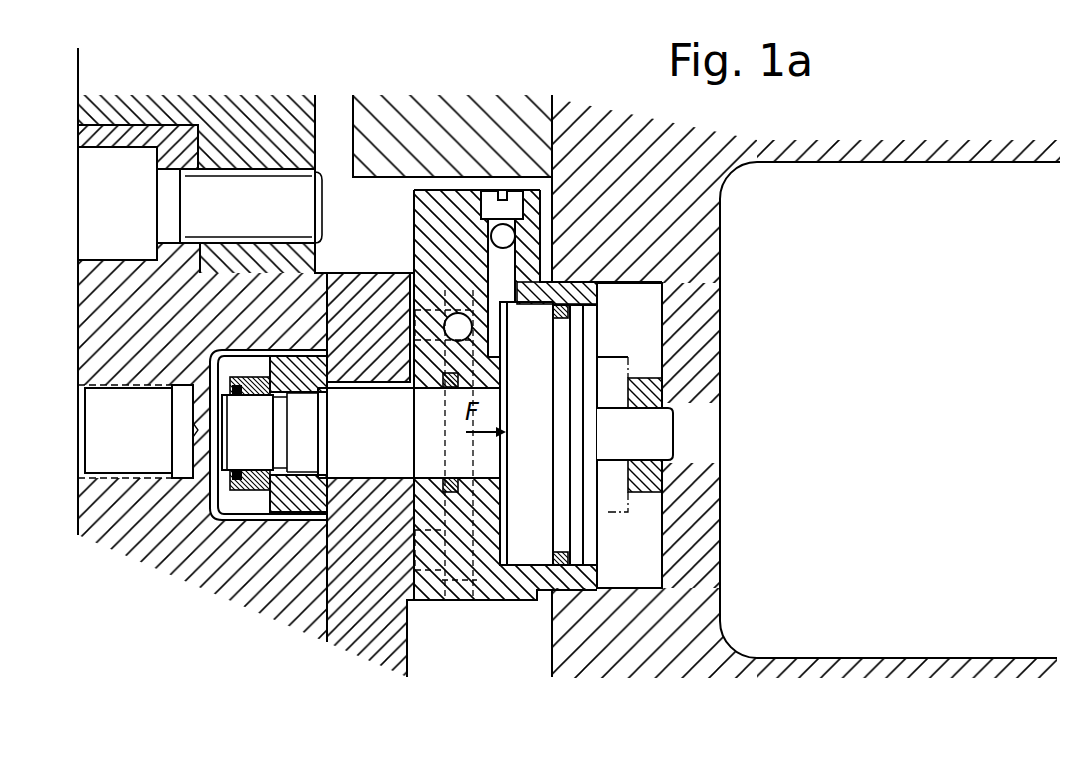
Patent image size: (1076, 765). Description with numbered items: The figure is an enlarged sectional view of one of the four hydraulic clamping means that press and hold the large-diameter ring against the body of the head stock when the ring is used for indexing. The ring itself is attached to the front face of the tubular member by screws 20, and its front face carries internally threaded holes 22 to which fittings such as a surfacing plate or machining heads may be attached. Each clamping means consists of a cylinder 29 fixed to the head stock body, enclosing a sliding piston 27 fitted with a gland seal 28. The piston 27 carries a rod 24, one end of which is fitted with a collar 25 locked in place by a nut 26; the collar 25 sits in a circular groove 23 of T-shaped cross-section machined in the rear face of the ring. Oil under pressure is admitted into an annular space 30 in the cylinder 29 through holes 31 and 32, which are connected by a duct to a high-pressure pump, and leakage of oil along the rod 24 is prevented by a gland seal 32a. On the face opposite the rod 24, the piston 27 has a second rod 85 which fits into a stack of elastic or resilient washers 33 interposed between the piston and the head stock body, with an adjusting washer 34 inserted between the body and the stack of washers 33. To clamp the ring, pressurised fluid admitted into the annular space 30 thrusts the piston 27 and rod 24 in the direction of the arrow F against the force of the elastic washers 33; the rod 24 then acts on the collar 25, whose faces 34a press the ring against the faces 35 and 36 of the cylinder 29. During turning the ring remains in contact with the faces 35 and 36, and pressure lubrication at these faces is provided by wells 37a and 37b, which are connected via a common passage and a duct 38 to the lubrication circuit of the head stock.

The screws 20 is at (253, 207).
The internally threaded holes 22 is at (125, 431).
The circular groove 23 is at (211, 366).
The rod 24 is at (361, 433).
The collar 25 is at (279, 360).
The nut 26 is at (253, 383).
The piston 27 is at (585, 548).
The gland seal 28 is at (570, 312).
The cylinder 29 is at (520, 591).
The annular space 30 is at (443, 580).
The hole 31 is at (492, 253).
The hole 32 is at (492, 235).
The gland seal 32a is at (447, 388).
The stack of elastic washers 33 is at (622, 357).
The adjusting washer 34 is at (647, 393).
The faces of the collar 34a is at (333, 352).
The face of cylinder 35 is at (443, 598).
The face of cylinder 36 is at (400, 372).
The well 37a is at (415, 305).
The well 37b is at (413, 548).
The duct 38 is at (449, 303).
The rod 85 is at (652, 432).